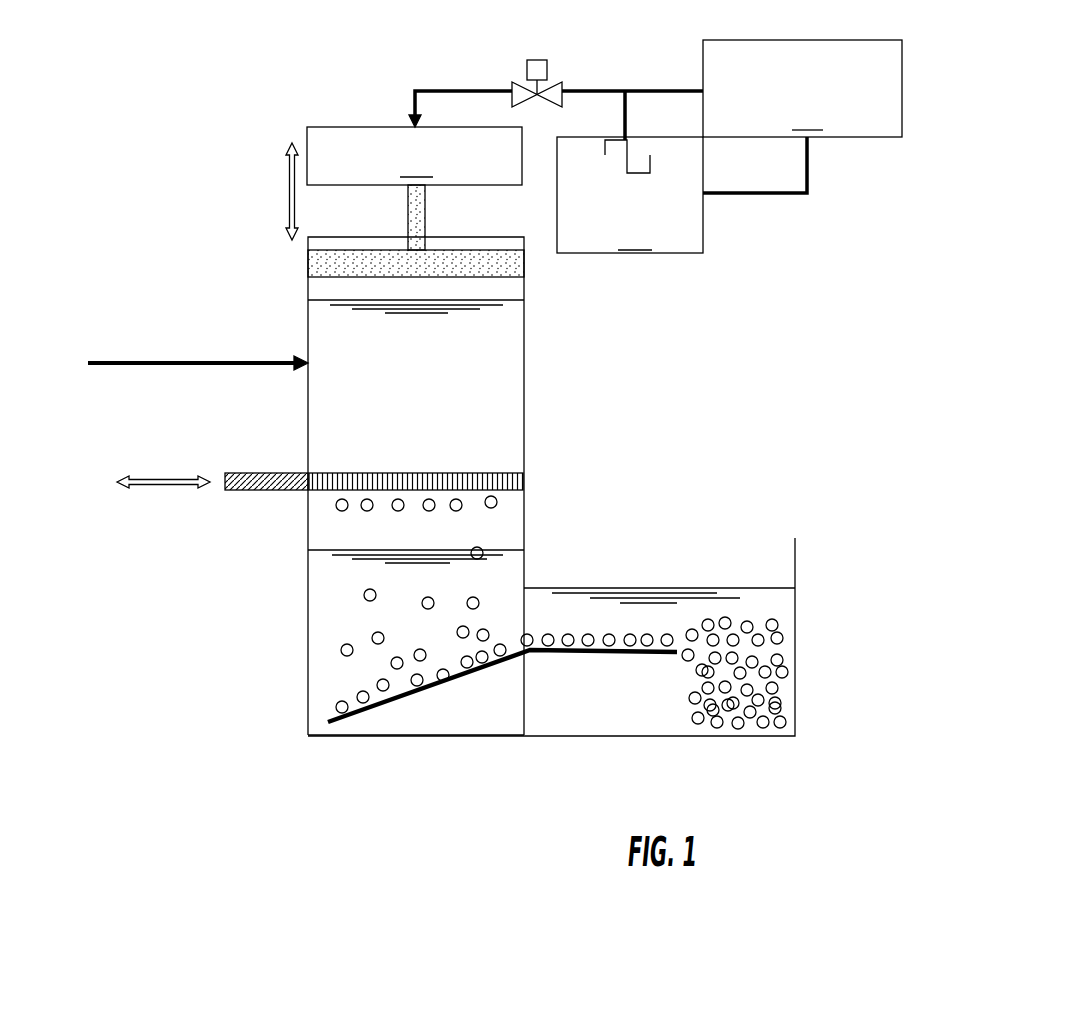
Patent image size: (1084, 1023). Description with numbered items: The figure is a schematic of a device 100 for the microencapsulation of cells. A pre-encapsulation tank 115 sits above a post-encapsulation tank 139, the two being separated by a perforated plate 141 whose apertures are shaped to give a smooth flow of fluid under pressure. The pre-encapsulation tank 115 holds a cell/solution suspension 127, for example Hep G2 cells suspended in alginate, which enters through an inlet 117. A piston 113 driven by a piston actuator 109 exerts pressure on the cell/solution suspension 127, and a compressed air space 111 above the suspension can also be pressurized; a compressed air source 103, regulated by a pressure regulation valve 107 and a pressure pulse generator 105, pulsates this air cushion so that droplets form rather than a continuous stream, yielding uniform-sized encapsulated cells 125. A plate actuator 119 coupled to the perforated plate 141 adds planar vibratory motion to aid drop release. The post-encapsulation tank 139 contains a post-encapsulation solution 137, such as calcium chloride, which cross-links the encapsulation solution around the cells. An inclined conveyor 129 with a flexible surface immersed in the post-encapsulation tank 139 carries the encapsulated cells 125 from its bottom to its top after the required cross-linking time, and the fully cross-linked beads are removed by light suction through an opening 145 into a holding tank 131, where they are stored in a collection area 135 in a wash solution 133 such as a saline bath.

The device 100 is at (797, 343).
The compressed air source 103 is at (802, 88).
The pressure pulse generator 105 is at (630, 195).
The pressure regulation valve 107 is at (562, 72).
The piston actuator 109 is at (404, 183).
The compressed air space 111 is at (318, 292).
The piston 113 is at (527, 267).
The pre-encapsulation tank 115 is at (527, 365).
The inlet 117 is at (198, 350).
The plate actuator 119 is at (262, 470).
The encapsulated cells 125 is at (362, 602).
The cell/solution suspension 127 is at (490, 332).
The conveyor 129 is at (367, 722).
The holding tank 131 is at (797, 637).
The wash solution 133 is at (677, 605).
The collection area 135 is at (779, 687).
The post-encapsulation solution 137 is at (327, 682).
The post-encapsulation tank 139 is at (308, 588).
The perforated plate 141 is at (527, 480).
The opening 145 is at (562, 618).